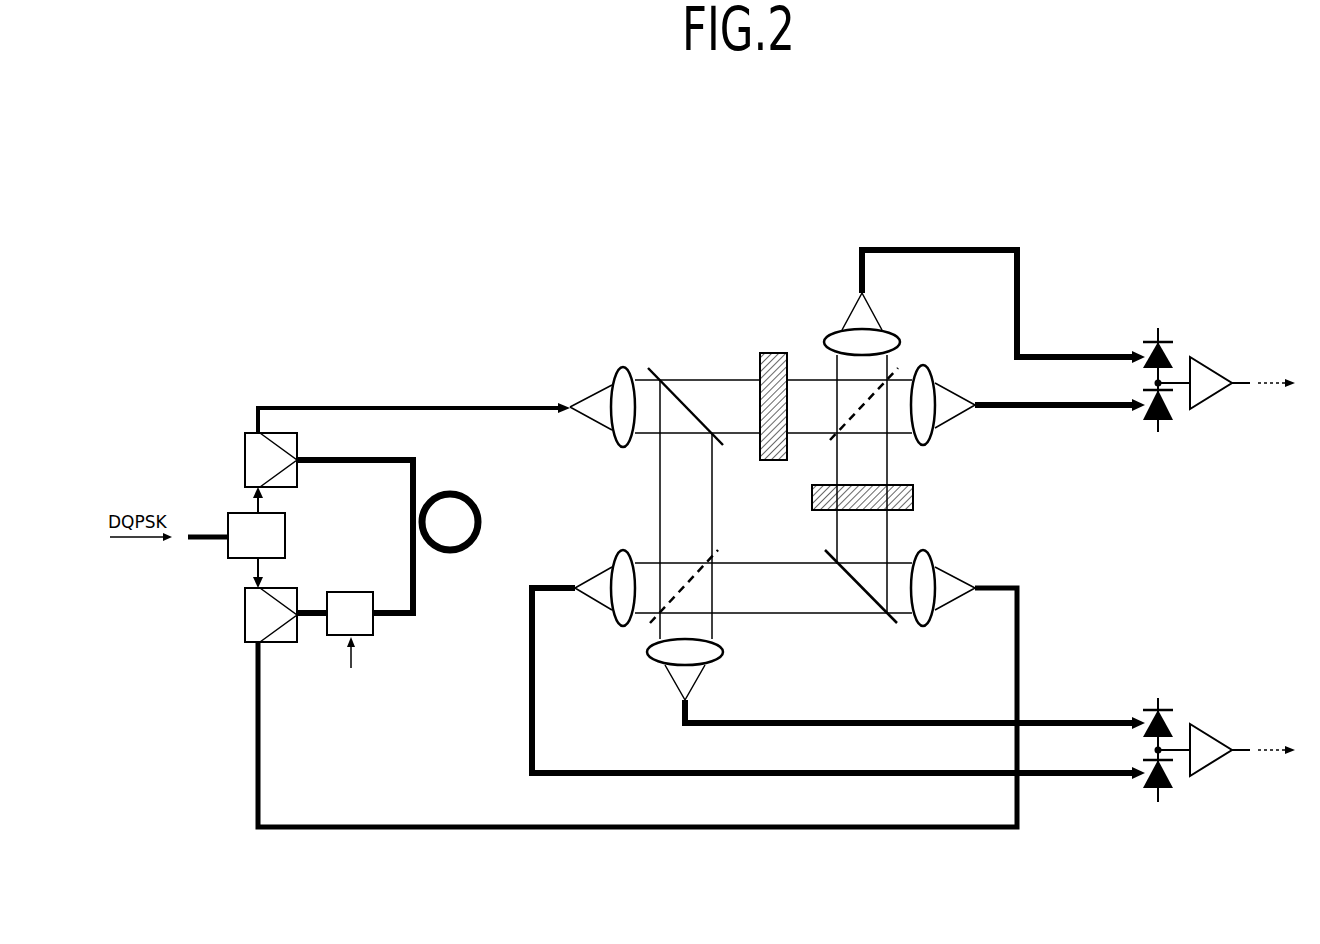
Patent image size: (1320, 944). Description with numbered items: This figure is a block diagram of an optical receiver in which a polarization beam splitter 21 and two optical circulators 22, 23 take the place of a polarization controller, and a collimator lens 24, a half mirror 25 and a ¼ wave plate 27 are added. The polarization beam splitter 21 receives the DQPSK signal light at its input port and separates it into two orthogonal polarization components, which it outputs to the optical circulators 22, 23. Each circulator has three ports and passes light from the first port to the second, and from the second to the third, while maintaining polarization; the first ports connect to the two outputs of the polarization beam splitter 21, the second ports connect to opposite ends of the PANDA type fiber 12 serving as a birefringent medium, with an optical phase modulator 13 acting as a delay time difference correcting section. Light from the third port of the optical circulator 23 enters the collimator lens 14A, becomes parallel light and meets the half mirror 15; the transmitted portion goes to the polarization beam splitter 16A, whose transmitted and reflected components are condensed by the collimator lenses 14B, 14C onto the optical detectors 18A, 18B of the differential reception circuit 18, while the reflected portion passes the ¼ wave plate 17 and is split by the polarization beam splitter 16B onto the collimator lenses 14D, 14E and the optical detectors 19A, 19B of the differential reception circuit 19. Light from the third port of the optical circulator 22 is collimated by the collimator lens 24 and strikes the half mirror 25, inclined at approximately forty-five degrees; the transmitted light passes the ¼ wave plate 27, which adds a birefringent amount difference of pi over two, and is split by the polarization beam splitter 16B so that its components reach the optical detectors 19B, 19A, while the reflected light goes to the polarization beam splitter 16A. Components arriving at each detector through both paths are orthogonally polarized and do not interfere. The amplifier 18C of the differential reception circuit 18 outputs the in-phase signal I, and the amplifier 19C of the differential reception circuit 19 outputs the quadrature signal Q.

The PANDA type fiber 12 is at (482, 505).
The optical phase modulator 13 is at (380, 638).
The collimator lens 14A is at (930, 622).
The collimator lens 14B is at (615, 623).
The collimator lens 14C is at (652, 663).
The collimator lens 14D is at (845, 330).
The collimator lens 14E is at (928, 375).
The half mirror 15 is at (855, 603).
The polarization beam splitter 16A is at (690, 580).
The polarization beam splitter 16B is at (873, 430).
The ¼ wave plate 17 is at (905, 490).
The differential reception circuit 18 is at (1219, 726).
The optical detector 18A is at (1163, 790).
The optical detector 18B is at (1168, 727).
The amplifier 18C is at (1216, 765).
The differential reception circuit 19 is at (1219, 362).
The optical detector 19A is at (1168, 360).
The optical detector 19B is at (1165, 424).
The amplifier 19C is at (1216, 398).
The polarization beam splitter 21 is at (228, 522).
The optical circulator 22 is at (245, 445).
The optical circulator 23 is at (245, 625).
The collimator lens 24 is at (616, 375).
The half mirror 25 is at (686, 403).
The ¼ wave plate 27 is at (760, 355).